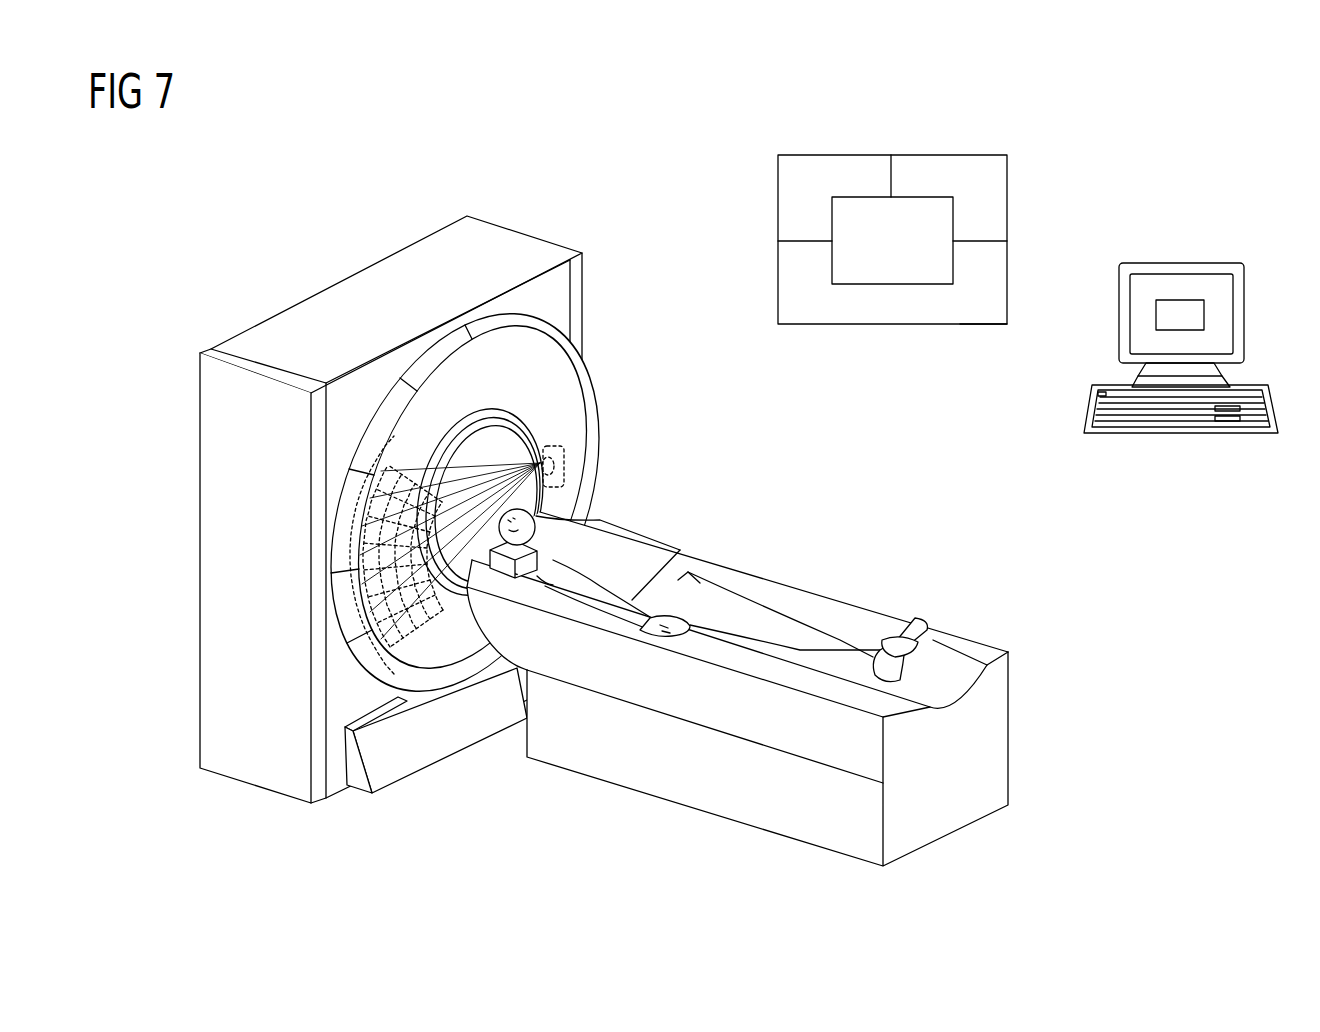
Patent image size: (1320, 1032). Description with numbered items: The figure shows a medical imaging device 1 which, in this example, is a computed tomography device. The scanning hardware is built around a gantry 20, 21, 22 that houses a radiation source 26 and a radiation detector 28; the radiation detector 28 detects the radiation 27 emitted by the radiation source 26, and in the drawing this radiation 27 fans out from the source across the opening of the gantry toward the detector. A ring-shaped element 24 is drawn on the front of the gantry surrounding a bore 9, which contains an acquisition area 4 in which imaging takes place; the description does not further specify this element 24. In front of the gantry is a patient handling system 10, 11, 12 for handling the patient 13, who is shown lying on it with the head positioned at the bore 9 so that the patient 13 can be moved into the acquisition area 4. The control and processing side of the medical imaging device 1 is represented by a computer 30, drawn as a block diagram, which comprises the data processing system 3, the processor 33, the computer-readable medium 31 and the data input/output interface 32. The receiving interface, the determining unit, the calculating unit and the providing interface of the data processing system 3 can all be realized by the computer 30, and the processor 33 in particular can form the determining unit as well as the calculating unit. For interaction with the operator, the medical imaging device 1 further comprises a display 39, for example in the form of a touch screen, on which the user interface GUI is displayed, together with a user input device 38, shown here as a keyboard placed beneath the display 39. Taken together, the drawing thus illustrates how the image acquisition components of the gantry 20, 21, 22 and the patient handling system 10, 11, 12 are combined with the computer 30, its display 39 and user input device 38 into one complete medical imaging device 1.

The medical imaging device 1 is at (372, 237).
The gantry 20 is at (172, 640).
The gantry 21 is at (252, 766).
The gantry 22 is at (284, 326).
The rotor 24 is at (450, 390).
The radiation source 26 is at (562, 463).
The radiation 27 is at (493, 448).
The radiation detector 28 is at (430, 656).
The acquisition area 4 is at (505, 442).
The bore 9 is at (486, 504).
The patient handling system 10 is at (600, 813).
The patient handling system 11 is at (760, 815).
The patient handling system 12 is at (966, 648).
The patient 13 is at (775, 597).
The data processing system 3 is at (875, 264).
The computer 30 is at (870, 157).
The computer-readable medium 31 is at (826, 165).
The data input/output interface 32 is at (946, 311).
The processor 33 is at (968, 165).
The user input device 38 is at (1176, 436).
The display 39 is at (1246, 306).
The user interface GUI is at (1180, 310).